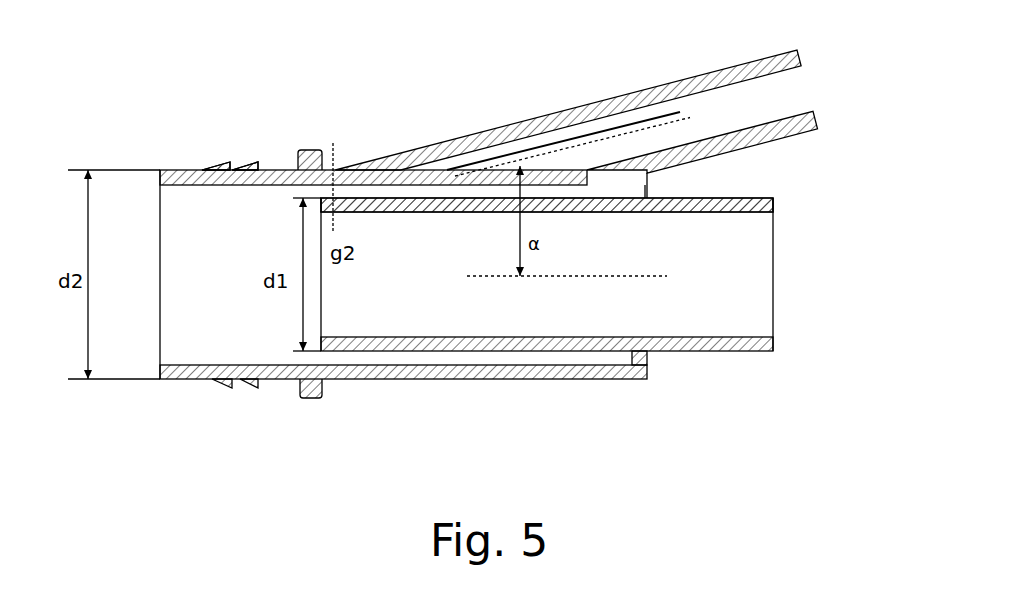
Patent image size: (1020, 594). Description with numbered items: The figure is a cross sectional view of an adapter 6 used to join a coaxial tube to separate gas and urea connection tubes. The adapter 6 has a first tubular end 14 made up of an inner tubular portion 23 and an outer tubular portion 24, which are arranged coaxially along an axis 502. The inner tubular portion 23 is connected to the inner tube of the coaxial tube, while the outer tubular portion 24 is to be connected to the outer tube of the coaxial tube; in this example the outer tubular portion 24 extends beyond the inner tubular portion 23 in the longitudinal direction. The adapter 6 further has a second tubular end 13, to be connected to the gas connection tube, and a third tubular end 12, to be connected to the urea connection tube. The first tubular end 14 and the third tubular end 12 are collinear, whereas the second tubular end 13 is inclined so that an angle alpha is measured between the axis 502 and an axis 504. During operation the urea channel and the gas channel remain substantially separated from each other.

The adapter 6 is at (670, 393).
The third tubular end 12 is at (767, 272).
The second tubular end 13 is at (787, 88).
The first tubular end 14 is at (498, 410).
The inner tubular portion 23 is at (363, 213).
The outer tubular portion 24 is at (195, 170).
The axis 502 is at (622, 277).
The axis 504 is at (605, 140).